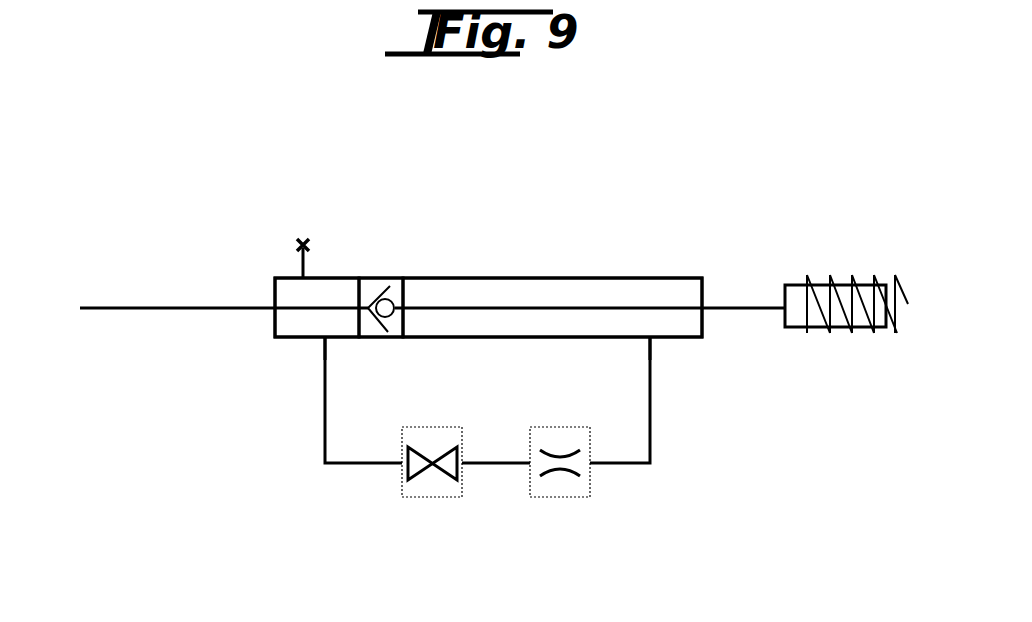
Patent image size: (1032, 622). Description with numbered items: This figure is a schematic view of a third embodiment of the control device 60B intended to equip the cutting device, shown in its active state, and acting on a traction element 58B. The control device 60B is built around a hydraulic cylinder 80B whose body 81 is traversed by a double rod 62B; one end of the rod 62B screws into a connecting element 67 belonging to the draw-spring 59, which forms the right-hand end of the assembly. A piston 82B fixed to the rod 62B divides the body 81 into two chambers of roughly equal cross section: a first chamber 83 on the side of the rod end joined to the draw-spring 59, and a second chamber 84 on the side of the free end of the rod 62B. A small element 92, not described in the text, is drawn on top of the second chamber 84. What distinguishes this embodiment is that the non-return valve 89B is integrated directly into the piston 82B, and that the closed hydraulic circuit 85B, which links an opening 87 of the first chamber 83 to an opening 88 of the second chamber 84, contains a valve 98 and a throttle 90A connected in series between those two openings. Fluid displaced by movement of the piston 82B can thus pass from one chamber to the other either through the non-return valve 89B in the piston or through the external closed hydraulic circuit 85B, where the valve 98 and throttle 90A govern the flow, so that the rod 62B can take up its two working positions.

The traction element 58B is at (856, 258).
The draw-spring 59 is at (900, 278).
The control device 60B is at (272, 340).
The rod 62B is at (738, 305).
The connecting element 67 is at (855, 335).
The hydraulic cylinder 80B is at (563, 277).
The body 81 is at (480, 277).
The piston 82B is at (378, 328).
The first chamber 83 is at (660, 282).
The second chamber 84 is at (283, 290).
The closed hydraulic circuit 85B is at (322, 420).
The opening 87 is at (665, 340).
The opening 88 is at (330, 345).
The non-return valve 89B is at (386, 300).
The throttle 90A is at (555, 480).
The vent 92 is at (298, 243).
The valve 98 is at (432, 480).